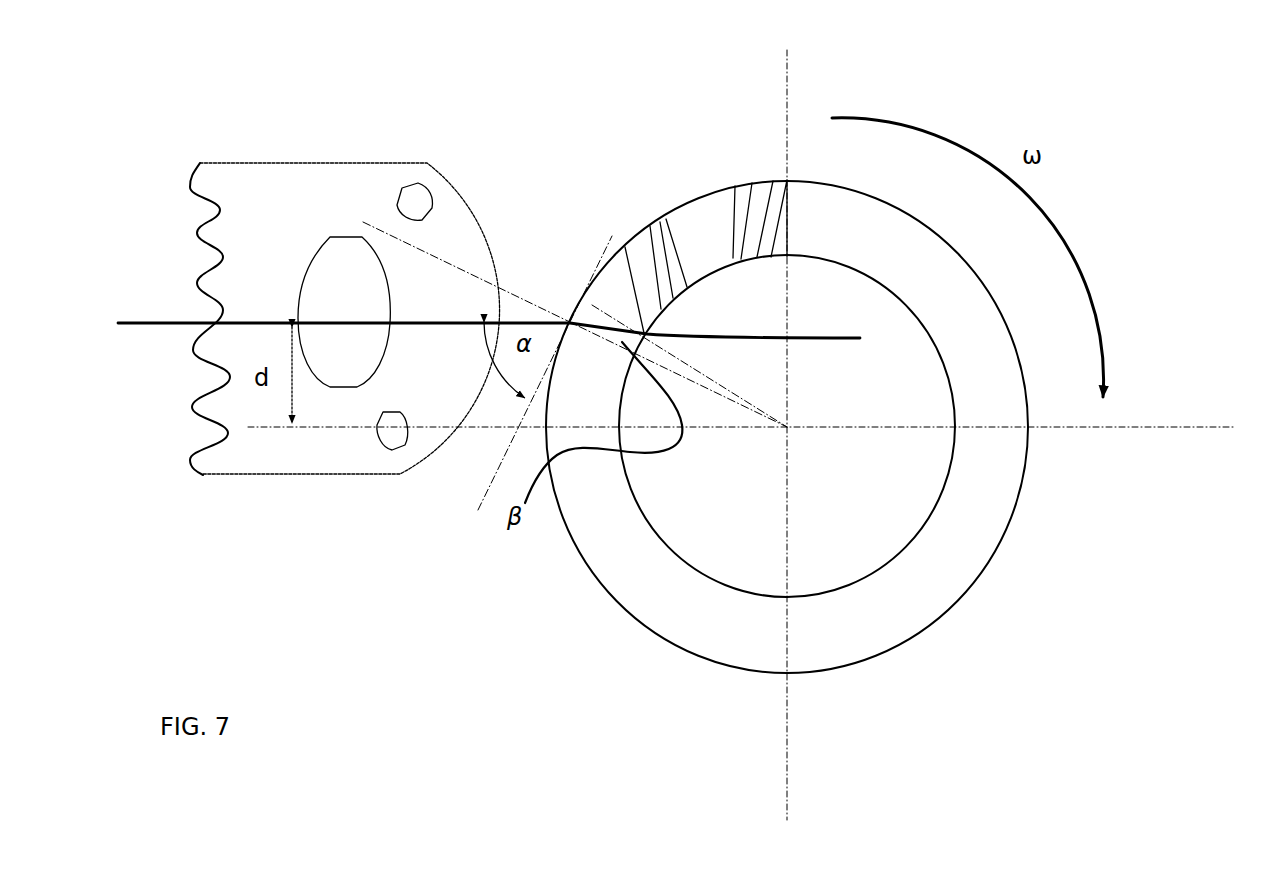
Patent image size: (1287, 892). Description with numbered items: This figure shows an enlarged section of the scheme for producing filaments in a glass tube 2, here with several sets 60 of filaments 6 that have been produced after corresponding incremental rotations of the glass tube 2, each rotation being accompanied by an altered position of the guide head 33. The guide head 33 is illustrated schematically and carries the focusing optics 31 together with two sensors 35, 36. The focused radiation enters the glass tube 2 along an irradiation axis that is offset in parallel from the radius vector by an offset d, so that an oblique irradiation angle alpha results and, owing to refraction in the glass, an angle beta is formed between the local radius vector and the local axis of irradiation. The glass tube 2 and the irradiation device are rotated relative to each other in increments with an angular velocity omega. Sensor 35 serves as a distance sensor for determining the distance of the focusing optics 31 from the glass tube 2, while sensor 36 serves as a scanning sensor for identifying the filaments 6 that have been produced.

The glass tube 2 is at (571, 541).
The filaments 6 is at (587, 323).
The sets of filaments 60 is at (635, 231).
The focusing optics 31 is at (350, 348).
The guide head 33 is at (282, 477).
The sensor 35 is at (391, 431).
The sensor 36 is at (413, 207).